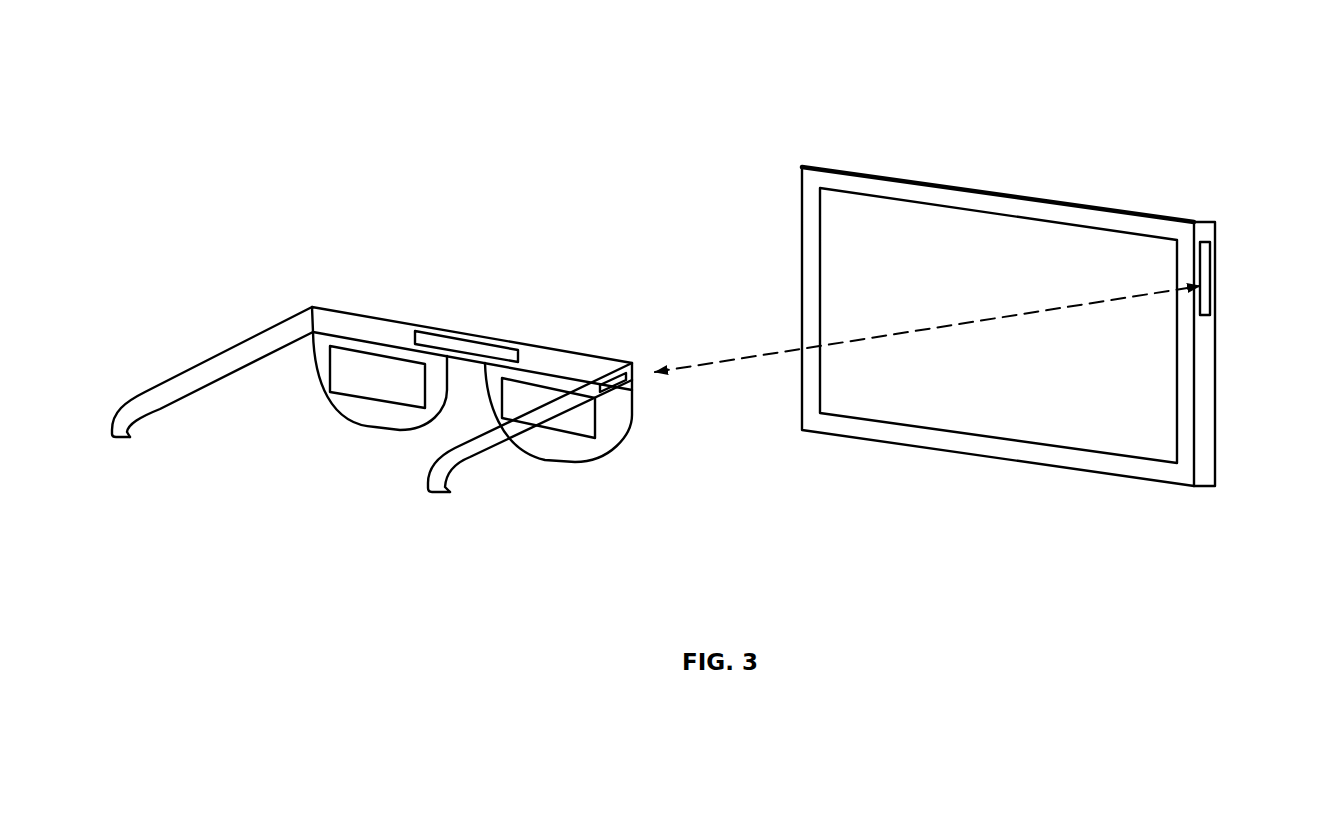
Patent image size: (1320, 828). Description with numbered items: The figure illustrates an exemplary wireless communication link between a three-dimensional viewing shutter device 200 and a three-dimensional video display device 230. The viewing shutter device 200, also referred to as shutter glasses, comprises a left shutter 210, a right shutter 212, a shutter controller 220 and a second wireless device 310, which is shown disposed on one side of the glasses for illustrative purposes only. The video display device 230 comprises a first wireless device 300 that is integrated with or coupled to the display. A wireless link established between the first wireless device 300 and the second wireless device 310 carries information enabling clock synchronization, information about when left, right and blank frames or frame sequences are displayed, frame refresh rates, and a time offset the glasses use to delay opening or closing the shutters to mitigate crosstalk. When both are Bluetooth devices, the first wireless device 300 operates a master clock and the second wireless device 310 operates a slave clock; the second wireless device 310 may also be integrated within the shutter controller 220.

The 3D viewing shutter device 200 is at (394, 365).
The left shutter 210 is at (378, 378).
The right shutter 212 is at (526, 401).
The shutter controller 220 is at (466, 343).
The 3D video display device 230 is at (1051, 278).
The first wireless device 300 is at (1216, 275).
The second wireless device 310 is at (631, 367).